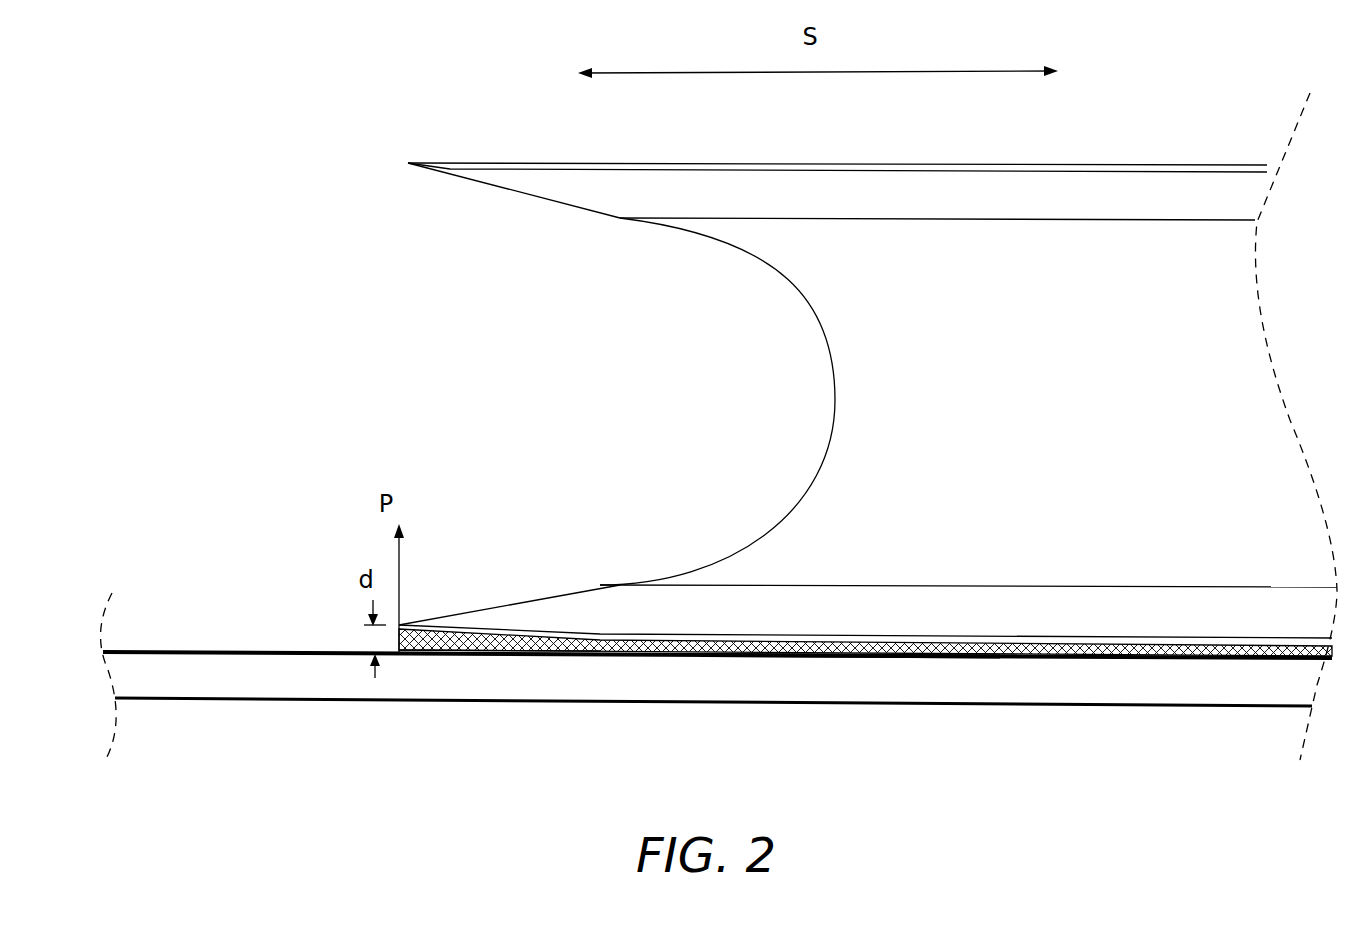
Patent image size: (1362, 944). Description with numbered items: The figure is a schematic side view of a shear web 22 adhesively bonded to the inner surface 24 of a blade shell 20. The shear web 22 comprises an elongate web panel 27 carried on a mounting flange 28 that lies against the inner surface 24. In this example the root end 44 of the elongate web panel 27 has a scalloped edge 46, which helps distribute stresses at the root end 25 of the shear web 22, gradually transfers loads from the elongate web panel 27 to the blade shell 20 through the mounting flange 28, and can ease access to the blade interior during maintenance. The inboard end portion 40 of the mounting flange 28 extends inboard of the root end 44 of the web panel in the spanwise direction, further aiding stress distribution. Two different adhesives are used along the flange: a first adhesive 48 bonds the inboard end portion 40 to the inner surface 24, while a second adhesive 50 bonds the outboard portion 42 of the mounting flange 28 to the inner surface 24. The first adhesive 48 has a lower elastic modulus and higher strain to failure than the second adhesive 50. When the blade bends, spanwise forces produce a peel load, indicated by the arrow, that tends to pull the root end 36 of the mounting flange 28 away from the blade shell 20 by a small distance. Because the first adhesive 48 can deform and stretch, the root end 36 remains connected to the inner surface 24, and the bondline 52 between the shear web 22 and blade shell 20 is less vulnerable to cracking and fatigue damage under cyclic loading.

The blade shell 20 is at (335, 680).
The shear web 22 is at (492, 130).
The inner surface 24 is at (250, 650).
The root end of the shear web 25 is at (474, 260).
The elongate web panel 27 is at (1072, 364).
The mounting flange 28 is at (1063, 182).
The root end of the mounting flange 36 is at (415, 625).
The inboard end portion 40 is at (562, 600).
The outboard portion 42 is at (1040, 600).
The root end of the elongate web panel 44 is at (858, 364).
The scalloped edge 46 is at (790, 288).
The first adhesive 48 is at (487, 657).
The second adhesive 50 is at (843, 660).
The bondline 52 is at (657, 656).